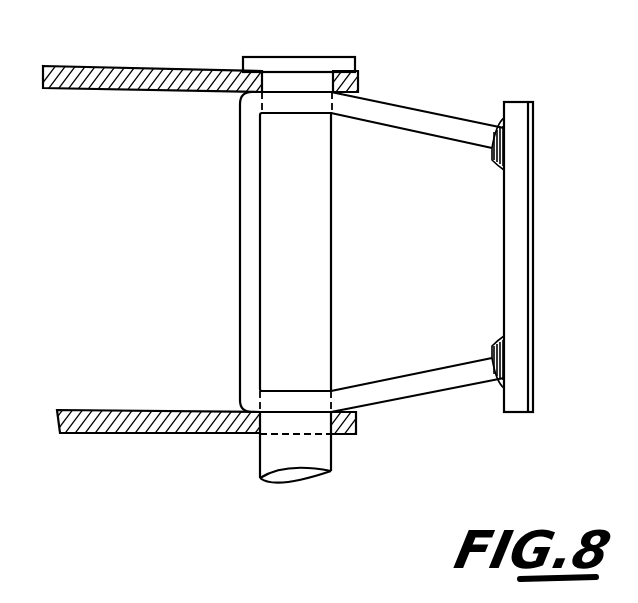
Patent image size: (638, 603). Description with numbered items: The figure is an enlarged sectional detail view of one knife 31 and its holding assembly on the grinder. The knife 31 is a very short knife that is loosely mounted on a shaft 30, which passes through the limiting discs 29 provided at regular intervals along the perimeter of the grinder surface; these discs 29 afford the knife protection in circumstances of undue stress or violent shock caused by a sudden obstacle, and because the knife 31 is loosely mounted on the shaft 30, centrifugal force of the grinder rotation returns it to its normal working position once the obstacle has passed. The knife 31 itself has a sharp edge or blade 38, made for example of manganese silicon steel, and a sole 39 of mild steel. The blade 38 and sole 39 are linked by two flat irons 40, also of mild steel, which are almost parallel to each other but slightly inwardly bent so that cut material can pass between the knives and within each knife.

The limiting disc 29 is at (110, 411).
The shaft 30 is at (308, 60).
The knife 31 is at (471, 242).
The blade 38 is at (521, 268).
The sole 39 is at (252, 258).
The flat iron 40 is at (402, 388).